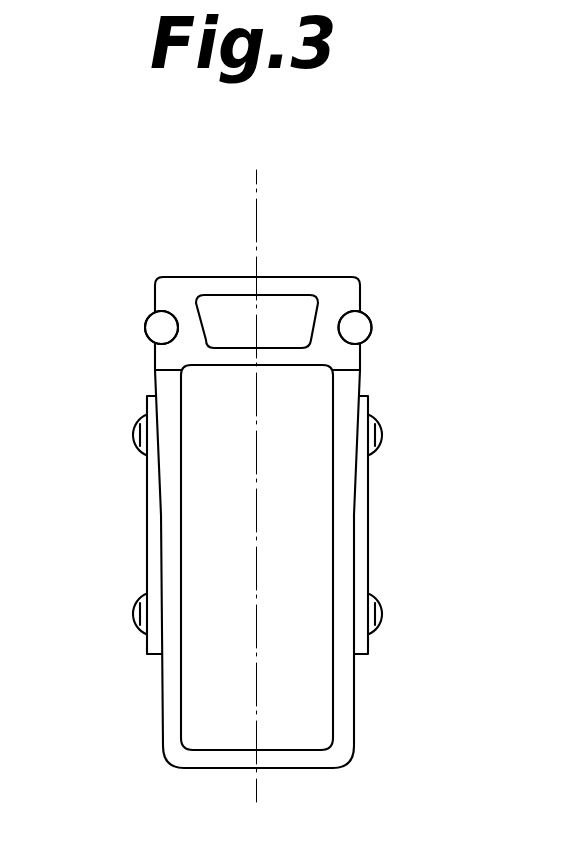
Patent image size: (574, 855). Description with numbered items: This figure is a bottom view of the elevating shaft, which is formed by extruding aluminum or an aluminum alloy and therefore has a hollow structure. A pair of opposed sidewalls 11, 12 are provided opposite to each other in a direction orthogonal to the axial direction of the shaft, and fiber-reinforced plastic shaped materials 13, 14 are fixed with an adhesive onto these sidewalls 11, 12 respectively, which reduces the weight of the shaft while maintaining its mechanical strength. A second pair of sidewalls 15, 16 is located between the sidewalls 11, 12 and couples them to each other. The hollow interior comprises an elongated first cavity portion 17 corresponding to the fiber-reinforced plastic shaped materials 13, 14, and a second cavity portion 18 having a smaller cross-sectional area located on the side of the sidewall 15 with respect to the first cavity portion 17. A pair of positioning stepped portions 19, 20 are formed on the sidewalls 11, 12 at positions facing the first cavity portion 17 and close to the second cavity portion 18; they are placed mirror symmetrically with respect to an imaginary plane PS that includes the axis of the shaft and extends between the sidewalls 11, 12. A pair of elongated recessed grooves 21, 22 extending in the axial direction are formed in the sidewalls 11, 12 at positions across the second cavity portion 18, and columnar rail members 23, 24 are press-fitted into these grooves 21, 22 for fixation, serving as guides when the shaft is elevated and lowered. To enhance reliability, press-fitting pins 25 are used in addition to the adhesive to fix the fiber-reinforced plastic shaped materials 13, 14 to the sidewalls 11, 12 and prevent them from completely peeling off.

The imaginary plane PS is at (253, 182).
The sidewall 11 is at (170, 688).
The sidewall 12 is at (350, 690).
The fiber-reinforced plastic shaped material 13 is at (158, 525).
The fiber-reinforced plastic shaped material 14 is at (360, 483).
The sidewall 15 is at (260, 277).
The sidewall 16 is at (268, 770).
The first cavity portion 17 is at (298, 545).
The second cavity portion 18 is at (293, 307).
The positioning stepped portion 19 is at (150, 400).
The positioning stepped portion 20 is at (364, 400).
The recessed groove 21 is at (160, 323).
The recessed groove 22 is at (354, 322).
The rail member 23 is at (150, 333).
The rail member 24 is at (362, 333).
The press-fitting pin 25 is at (138, 428).